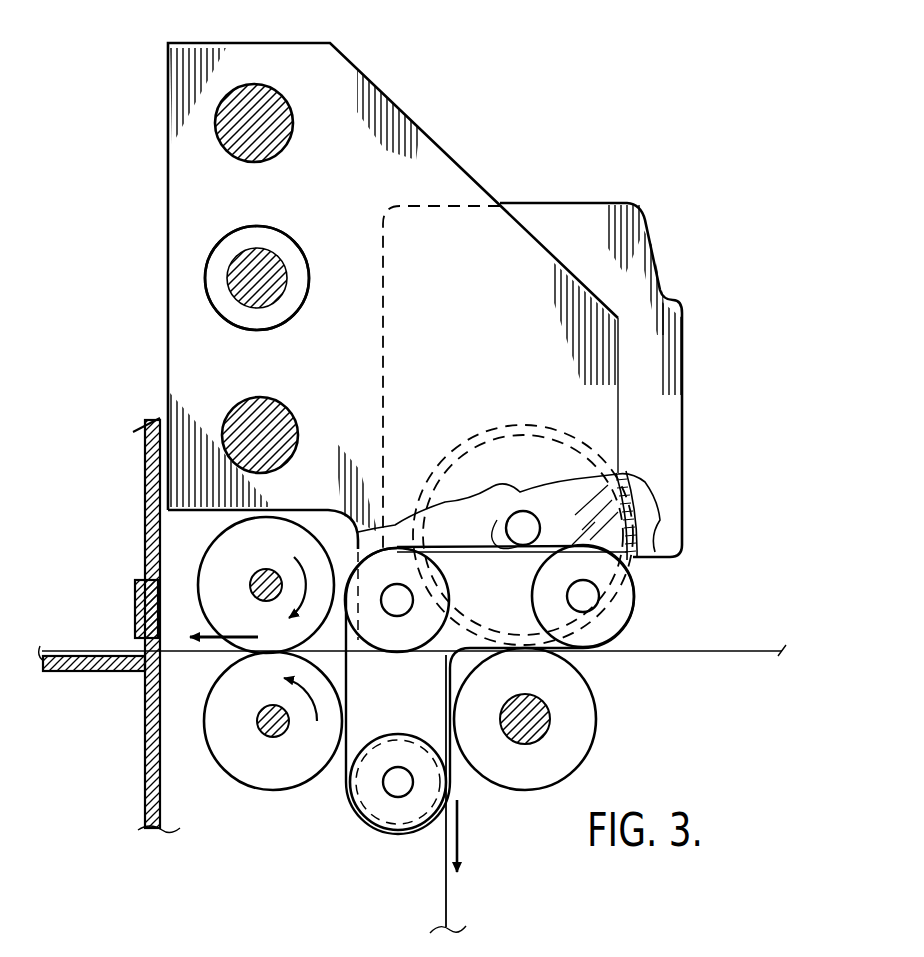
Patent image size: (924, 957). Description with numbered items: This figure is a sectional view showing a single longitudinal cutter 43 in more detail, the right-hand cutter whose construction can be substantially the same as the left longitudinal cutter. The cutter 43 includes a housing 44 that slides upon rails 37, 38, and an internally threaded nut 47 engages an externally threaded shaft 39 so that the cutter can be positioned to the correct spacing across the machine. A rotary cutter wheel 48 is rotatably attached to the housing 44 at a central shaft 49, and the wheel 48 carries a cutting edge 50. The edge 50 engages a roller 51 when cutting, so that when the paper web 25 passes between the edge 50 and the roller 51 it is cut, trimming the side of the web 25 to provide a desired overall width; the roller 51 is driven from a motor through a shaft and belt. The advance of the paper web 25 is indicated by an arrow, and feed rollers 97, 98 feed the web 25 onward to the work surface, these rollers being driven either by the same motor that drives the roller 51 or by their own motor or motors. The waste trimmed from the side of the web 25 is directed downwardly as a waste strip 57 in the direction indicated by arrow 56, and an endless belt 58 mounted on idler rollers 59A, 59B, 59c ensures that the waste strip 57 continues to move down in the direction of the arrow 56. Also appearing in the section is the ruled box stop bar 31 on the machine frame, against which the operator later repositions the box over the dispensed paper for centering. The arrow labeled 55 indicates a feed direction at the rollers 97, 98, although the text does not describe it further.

The paper web 25 is at (73, 652).
The ruled box stop bar 31 is at (135, 615).
The rail 37 is at (270, 106).
The rail 38 is at (268, 400).
The externally threaded shaft 39 is at (283, 250).
The right longitudinal cutter 43 is at (582, 70).
The housing 44 is at (390, 96).
The internally threaded nut 47 is at (205, 270).
The rotary cutter wheel 48 is at (518, 462).
The central shaft 49 is at (530, 522).
The cutting edge 50 is at (458, 432).
The roller 51 is at (597, 718).
The sheet feed direction arrow 55 is at (222, 640).
The arrow 56 is at (459, 835).
The waste strip 57 is at (446, 890).
The endless belt 58 is at (345, 775).
The idler roller 59A is at (377, 803).
The idler roller 59B is at (410, 622).
The idler roller 59c is at (550, 580).
The feed roller 97 is at (280, 557).
The feed roller 98 is at (250, 724).